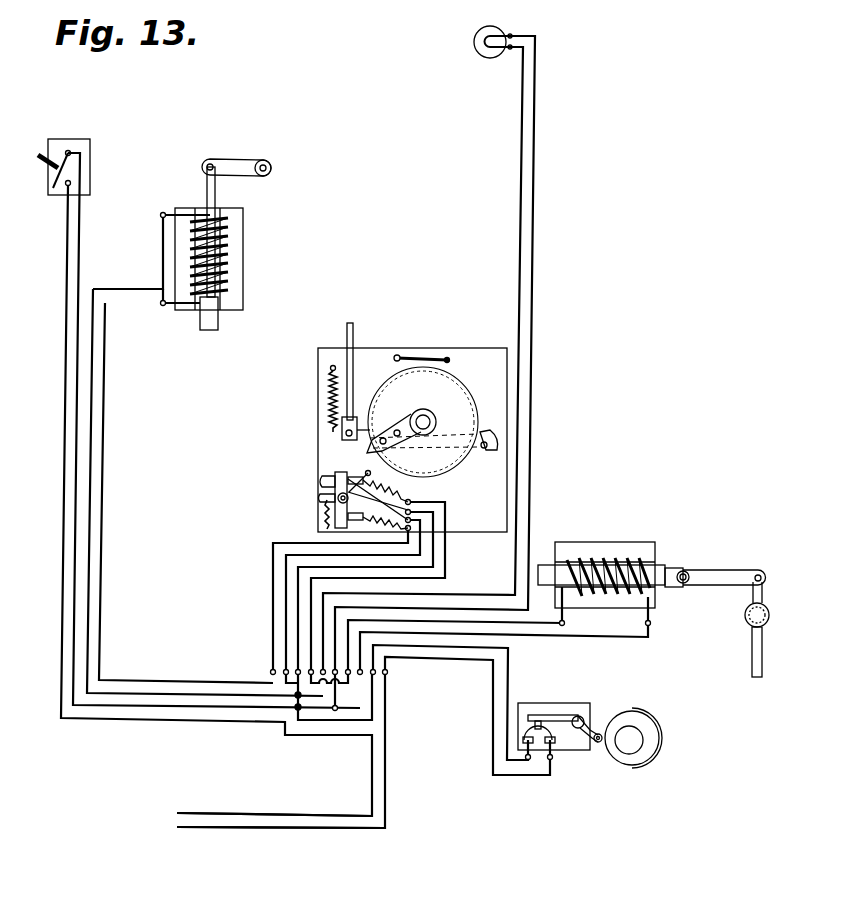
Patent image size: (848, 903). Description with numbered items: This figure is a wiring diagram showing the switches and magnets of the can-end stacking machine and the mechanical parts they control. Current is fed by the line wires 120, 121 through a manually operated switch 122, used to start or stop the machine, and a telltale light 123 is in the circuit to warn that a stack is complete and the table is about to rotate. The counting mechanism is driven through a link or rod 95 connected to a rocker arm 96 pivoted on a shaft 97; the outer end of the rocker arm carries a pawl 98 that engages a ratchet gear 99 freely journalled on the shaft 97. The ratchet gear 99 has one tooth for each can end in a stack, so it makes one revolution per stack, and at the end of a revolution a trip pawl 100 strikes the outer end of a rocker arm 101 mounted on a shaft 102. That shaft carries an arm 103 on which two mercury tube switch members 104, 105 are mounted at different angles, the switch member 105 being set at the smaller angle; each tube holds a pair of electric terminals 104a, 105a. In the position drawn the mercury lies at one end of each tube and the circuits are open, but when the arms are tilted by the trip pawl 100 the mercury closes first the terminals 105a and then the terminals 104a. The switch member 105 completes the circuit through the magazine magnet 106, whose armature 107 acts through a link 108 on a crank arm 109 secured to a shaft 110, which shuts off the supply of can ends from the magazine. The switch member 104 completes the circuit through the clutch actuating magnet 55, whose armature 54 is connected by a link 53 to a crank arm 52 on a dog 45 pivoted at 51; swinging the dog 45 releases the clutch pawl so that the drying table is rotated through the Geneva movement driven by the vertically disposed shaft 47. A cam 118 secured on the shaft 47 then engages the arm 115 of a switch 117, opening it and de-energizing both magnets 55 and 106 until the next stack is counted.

The dog 45 is at (752, 643).
The vertically disposed shaft 47 is at (637, 748).
The pivot 51 is at (746, 615).
The crank arm 52 is at (753, 597).
The link 53 is at (717, 568).
The armature 54 is at (543, 562).
The magnet 55 is at (608, 540).
The link or rod 95 is at (356, 326).
The rocker arm 96 is at (333, 432).
The shaft 97 is at (432, 410).
The pawl 98 is at (498, 438).
The ratchet gear 99 is at (460, 398).
The trip pawl 100 is at (377, 443).
The rocker arm 101 is at (371, 472).
The shaft 102 is at (327, 500).
The arm 103 is at (328, 527).
The switch member 104 is at (320, 482).
The contact terminals 104a is at (360, 472).
The switch member 105 is at (325, 517).
The contact terminals 105a is at (380, 500).
The magnet 106 is at (245, 271).
The armature 107 is at (218, 326).
The link 108 is at (207, 190).
The crank arm 109 is at (245, 140).
The shaft 110 is at (271, 168).
The arm 115 is at (588, 732).
The switch 117 is at (540, 725).
The cam 118 is at (660, 740).
The line wire 120 is at (285, 813).
The line wire 121 is at (285, 829).
The manually operated switch 122 is at (56, 185).
The telltale light 123 is at (490, 58).